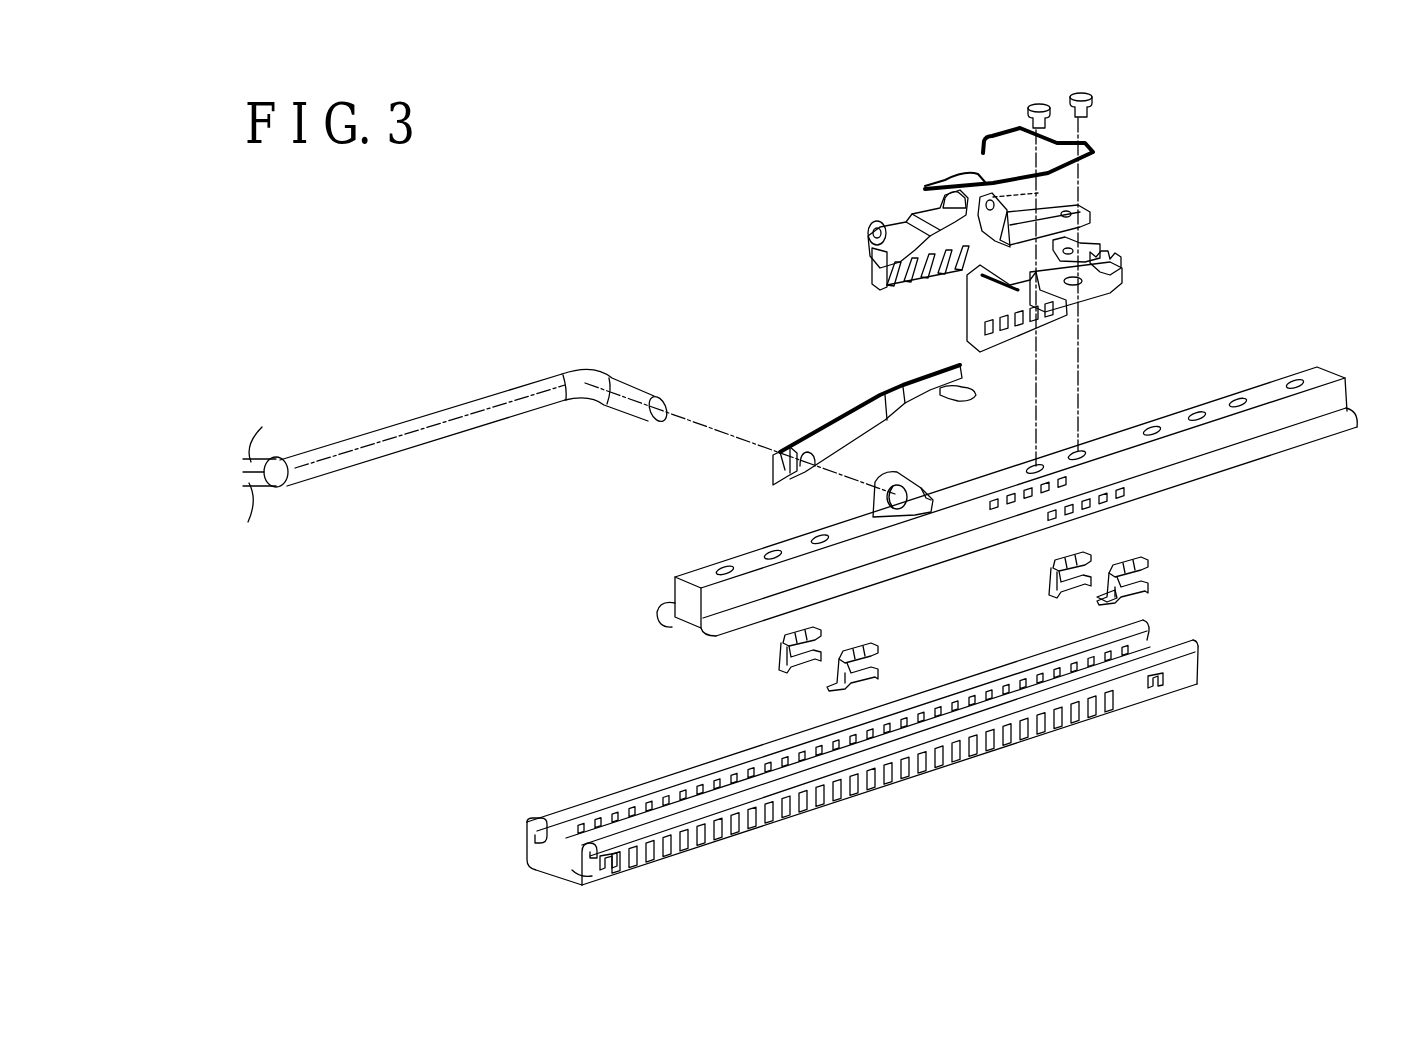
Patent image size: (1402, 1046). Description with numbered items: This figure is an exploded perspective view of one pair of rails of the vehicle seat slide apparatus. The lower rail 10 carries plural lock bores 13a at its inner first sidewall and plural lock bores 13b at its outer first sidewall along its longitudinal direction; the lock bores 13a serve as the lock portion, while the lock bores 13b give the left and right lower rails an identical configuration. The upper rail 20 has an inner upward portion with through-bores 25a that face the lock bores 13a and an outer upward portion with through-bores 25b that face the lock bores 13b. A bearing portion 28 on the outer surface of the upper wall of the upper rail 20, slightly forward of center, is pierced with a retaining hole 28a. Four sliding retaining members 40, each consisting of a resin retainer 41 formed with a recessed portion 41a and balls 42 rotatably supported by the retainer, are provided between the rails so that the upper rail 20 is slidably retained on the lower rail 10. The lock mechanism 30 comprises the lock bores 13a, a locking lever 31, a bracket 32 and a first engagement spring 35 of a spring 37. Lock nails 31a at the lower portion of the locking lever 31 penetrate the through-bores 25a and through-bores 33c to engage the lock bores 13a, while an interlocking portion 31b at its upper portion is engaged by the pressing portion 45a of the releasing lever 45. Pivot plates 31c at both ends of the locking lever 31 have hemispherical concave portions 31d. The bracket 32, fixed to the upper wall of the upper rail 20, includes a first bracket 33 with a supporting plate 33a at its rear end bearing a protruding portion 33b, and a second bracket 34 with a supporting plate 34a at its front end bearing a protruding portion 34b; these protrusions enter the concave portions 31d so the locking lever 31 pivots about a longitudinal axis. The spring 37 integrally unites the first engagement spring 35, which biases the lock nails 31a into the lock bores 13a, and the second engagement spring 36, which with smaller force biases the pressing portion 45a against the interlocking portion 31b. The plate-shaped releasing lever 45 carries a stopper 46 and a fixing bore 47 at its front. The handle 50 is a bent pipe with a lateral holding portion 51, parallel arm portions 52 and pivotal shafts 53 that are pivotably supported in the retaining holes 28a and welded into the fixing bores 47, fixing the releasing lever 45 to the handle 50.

The lower rail 10 is at (612, 789).
The lock bores 13a is at (688, 795).
The lock bores 13b is at (735, 827).
The upper rail 20 is at (693, 562).
The through-bores 25a is at (1002, 490).
The through-bores 25b is at (1108, 507).
The bearing portion 28 is at (915, 487).
The retaining hole 28a is at (890, 496).
The lock mechanism 30 is at (1241, 152).
The locking lever 31 is at (816, 192).
The lock nails 31a is at (887, 286).
The interlocking portion 31b is at (927, 210).
The pivot plates 31c is at (870, 246).
The concave portion 31d is at (868, 234).
The bracket 32 is at (1190, 283).
The first bracket 33 is at (1106, 285).
The supporting plate 33a is at (1121, 260).
The protruding portion 33b is at (1083, 243).
The through-bores 33c is at (1007, 325).
The second bracket 34 is at (1087, 212).
The supporting plate 34a is at (1007, 224).
The protruding portion 34b is at (1036, 193).
The first engagement spring 35 is at (952, 170).
The second engagement spring 36 is at (993, 137).
The spring 37 is at (990, 88).
The sliding retaining member 40 is at (1206, 569).
The retainer 41 is at (1148, 578).
The recessed portion 41a is at (1100, 588).
The balls 42 is at (1095, 563).
The releasing lever 45 is at (822, 398).
The pressing portion 45a is at (950, 405).
The stopper 46 is at (771, 470).
The fixing bore 47 is at (813, 458).
The handle 50 is at (431, 340).
The holding portion 51 is at (272, 463).
The arm portion 52 is at (390, 451).
The pivotal shaft 53 is at (640, 393).